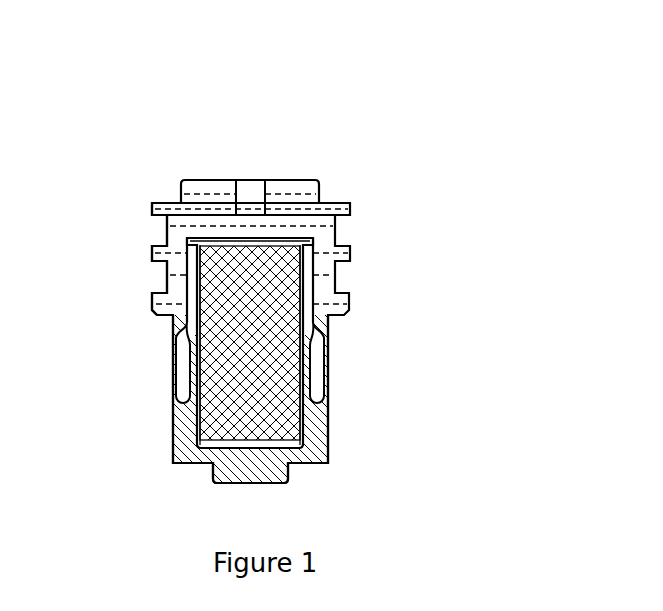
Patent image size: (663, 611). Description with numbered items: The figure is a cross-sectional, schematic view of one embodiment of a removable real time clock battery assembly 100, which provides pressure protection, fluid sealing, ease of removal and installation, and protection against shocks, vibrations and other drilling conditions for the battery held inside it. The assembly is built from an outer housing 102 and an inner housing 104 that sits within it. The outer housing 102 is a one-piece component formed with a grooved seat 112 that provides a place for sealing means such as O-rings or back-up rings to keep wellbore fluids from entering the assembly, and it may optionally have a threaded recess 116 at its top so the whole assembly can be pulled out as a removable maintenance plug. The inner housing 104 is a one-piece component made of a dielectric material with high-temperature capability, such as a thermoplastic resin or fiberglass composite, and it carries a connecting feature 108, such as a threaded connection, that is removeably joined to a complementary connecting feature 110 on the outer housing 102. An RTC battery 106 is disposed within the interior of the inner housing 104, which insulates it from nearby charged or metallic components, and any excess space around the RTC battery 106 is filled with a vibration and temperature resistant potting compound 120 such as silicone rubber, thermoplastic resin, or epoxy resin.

The removable RTC battery assembly 100 is at (364, 269).
The outer housing 102 is at (311, 176).
The inner housing 104 is at (308, 466).
The RTC battery 106 is at (243, 320).
The connecting feature 108 is at (318, 352).
The complementary connecting feature 110 is at (327, 365).
The grooved seat 112 is at (167, 285).
The threaded recess 116 is at (246, 177).
The potting compound 120 is at (197, 408).